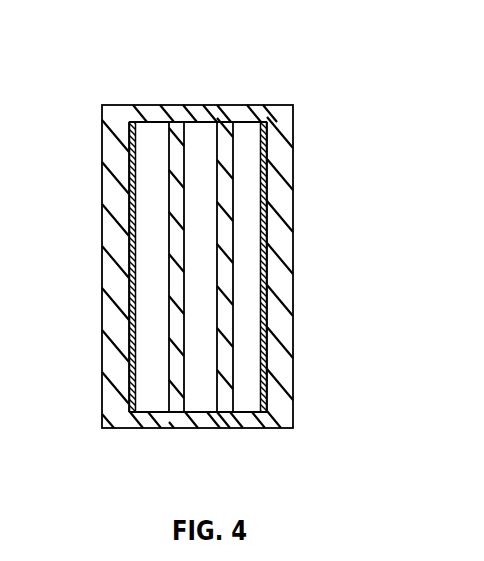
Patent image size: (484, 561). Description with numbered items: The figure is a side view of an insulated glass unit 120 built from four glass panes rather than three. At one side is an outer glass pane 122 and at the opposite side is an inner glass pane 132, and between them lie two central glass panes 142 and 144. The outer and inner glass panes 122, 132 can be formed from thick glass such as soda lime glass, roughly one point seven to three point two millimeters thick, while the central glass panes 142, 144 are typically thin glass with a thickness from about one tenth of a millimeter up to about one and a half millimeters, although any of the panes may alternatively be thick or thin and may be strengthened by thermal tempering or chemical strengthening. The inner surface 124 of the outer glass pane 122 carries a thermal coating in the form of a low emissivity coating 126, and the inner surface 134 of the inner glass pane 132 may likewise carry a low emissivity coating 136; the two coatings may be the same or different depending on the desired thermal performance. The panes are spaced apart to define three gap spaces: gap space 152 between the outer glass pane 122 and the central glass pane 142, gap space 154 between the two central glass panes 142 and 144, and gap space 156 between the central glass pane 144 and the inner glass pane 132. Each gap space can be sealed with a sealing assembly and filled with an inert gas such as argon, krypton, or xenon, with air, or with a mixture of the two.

The insulated glass unit 120 is at (322, 142).
The outer glass pane 122 is at (280, 115).
The inner surface of the outer pane 124 is at (253, 382).
The low emissivity coating 126 is at (267, 250).
The inner glass pane 132 is at (114, 105).
The inner surface of the inner pane 134 is at (141, 382).
The low emissivity coating 136 is at (130, 253).
The central glass pane 142 is at (227, 105).
The central glass pane 144 is at (171, 105).
The gap space 152 is at (247, 303).
The gap space 154 is at (200, 140).
The gap space 156 is at (146, 182).